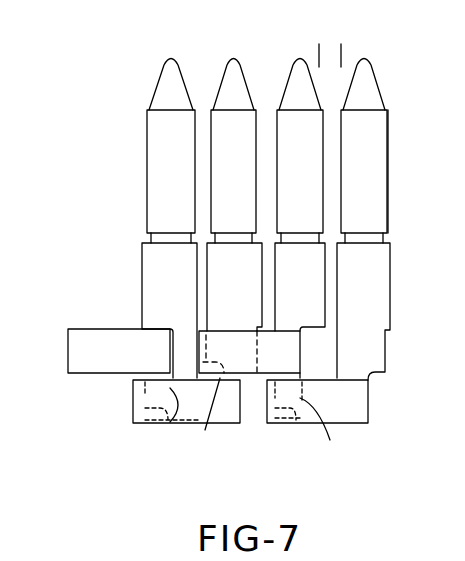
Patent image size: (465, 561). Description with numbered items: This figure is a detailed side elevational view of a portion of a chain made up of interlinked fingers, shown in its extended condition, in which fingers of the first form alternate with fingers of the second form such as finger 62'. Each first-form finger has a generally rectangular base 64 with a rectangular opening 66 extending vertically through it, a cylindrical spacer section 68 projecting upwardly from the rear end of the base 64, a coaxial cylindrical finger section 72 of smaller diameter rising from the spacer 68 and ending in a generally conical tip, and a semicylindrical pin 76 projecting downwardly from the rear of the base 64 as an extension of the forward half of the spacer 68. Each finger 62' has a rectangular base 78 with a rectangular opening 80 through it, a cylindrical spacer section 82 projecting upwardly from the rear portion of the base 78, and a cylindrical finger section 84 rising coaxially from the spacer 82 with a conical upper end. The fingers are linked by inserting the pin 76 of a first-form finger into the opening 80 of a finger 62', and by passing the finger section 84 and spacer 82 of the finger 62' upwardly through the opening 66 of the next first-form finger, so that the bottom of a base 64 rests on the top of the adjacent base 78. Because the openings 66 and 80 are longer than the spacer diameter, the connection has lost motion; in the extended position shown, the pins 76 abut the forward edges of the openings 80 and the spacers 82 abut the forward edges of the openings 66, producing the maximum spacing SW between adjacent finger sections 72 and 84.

The cylindrical finger section 72 is at (184, 170).
The cylindrical finger section 84 is at (247, 170).
The cylindrical spacer section 68 is at (181, 291).
The cylindrical spacer section 82 is at (238, 291).
The rectangular base 64 is at (78, 343).
The rectangular opening 66 is at (203, 432).
The semicylindrical pin 76 is at (155, 420).
The rectangular base 78 is at (190, 417).
The rectangular opening 80 is at (150, 408).
The second form of finger 62' is at (412, 171).
The maximum spacing SW is at (326, 44).